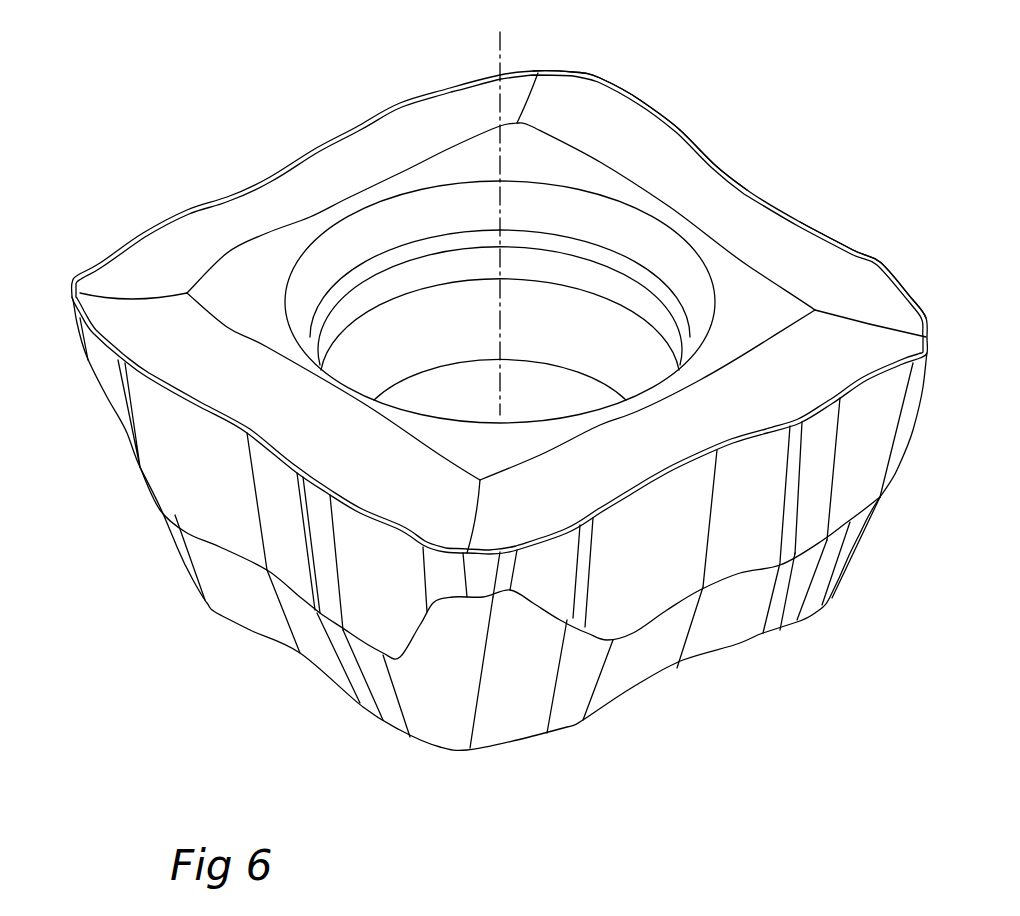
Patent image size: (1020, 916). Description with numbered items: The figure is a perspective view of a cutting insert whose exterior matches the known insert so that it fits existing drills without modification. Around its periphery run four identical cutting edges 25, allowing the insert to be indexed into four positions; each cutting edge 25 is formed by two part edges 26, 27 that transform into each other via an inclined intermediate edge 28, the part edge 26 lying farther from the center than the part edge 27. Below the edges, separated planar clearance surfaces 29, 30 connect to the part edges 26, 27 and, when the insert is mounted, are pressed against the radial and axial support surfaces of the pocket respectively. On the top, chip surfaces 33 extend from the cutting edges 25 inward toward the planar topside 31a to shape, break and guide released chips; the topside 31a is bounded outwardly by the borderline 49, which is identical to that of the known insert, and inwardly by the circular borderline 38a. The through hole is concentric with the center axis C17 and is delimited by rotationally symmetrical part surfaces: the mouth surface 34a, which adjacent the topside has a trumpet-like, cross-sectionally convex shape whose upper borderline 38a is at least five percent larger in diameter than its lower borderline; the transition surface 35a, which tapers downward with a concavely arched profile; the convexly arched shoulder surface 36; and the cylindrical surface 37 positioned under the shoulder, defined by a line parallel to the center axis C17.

The cutting edge 25 is at (304, 140).
The part edge 26 is at (623, 96).
The part edge 27 is at (832, 236).
The inclined intermediate edge 28 is at (712, 157).
The clearance surface 29 is at (365, 610).
The clearance surface 30 is at (192, 508).
The topside 31a is at (501, 301).
The chip surface 33 is at (302, 437).
The mouth surface 34a is at (500, 286).
The transition surface 35a is at (417, 276).
The shoulder surface 36 is at (577, 343).
The cylindrical surface 37 is at (523, 407).
The upper circular borderline 38a is at (513, 183).
The outer borderline 49 is at (329, 213).
The center axis C17 is at (500, 47).